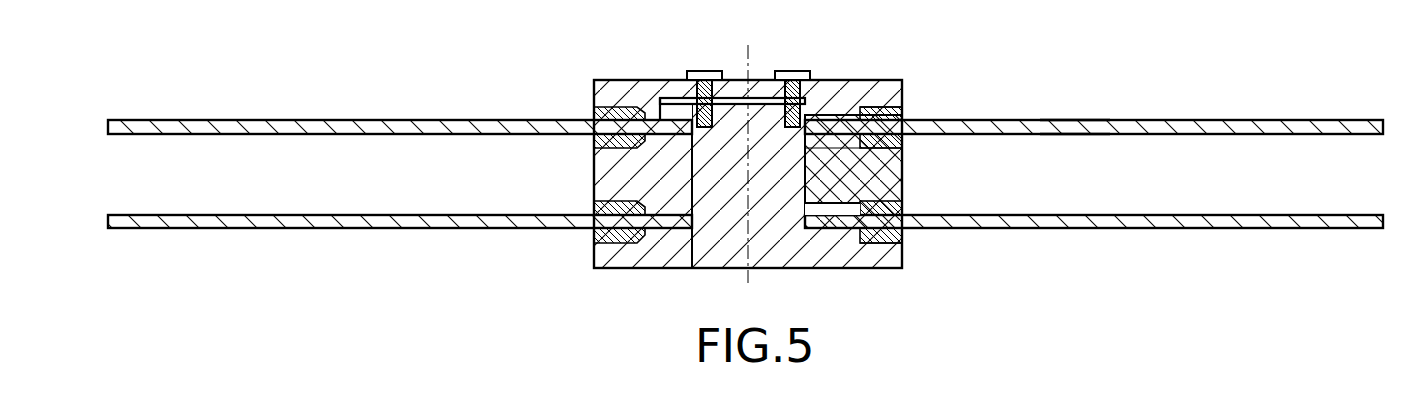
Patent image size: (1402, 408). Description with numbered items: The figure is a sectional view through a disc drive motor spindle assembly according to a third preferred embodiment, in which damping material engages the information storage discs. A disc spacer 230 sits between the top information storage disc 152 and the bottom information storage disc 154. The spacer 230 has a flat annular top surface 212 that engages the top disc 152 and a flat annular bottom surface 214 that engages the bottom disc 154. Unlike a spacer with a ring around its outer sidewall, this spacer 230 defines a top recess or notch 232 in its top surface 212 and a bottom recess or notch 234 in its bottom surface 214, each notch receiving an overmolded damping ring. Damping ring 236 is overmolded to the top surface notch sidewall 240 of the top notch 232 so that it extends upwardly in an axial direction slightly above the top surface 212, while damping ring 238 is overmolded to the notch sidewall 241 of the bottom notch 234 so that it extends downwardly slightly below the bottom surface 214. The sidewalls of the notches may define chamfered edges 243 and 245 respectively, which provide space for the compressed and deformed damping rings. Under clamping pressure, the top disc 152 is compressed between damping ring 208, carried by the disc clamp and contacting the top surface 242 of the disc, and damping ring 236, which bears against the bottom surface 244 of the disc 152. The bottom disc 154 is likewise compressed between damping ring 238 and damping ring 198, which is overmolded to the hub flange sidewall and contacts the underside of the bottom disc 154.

The top information storage disc 152 is at (1200, 128).
The bottom information storage disc 154 is at (1232, 215).
The damping ring 198 is at (895, 268).
The damping ring 208 is at (886, 120).
The top surface 212 is at (845, 122).
The bottom surface 214 is at (824, 220).
The disc spacer 230 is at (890, 174).
The top recess or notch 232 is at (882, 146).
The bottom recess or notch 234 is at (882, 208).
The damping ring 236 is at (905, 143).
The damping ring 238 is at (893, 216).
The top surface notch sidewall 240 is at (887, 123).
The notch sidewall 241 is at (880, 232).
The top surface 242 is at (1076, 121).
The chamfered edge 243 is at (828, 122).
The bottom surface 244 is at (1078, 136).
The chamfered edge 245 is at (810, 203).